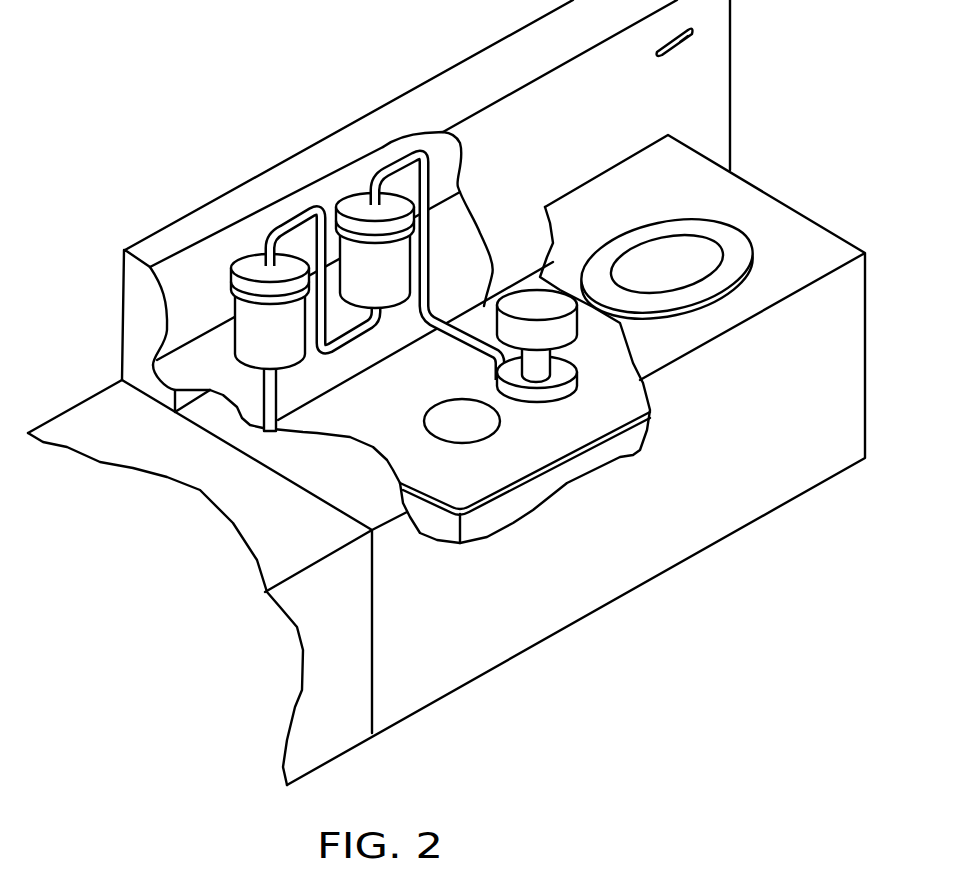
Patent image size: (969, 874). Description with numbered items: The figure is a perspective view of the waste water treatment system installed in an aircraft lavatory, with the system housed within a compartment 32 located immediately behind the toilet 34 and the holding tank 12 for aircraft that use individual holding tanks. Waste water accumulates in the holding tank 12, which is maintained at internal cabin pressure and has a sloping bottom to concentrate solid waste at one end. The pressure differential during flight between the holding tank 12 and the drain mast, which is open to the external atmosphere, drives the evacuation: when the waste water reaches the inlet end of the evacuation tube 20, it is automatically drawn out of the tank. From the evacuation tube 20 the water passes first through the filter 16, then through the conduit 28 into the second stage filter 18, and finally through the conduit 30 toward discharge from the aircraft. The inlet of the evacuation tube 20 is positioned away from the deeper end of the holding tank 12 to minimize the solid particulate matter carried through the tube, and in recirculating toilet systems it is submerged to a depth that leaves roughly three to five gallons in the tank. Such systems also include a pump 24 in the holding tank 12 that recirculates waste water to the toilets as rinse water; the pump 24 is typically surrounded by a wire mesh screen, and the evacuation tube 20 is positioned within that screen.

The holding tank 12 is at (517, 507).
The filter 16 is at (353, 200).
The second stage filter 18 is at (253, 263).
The evacuation tube 20 is at (472, 345).
The pump 24 is at (532, 310).
The conduit 28 is at (288, 222).
The conduit 30 is at (306, 415).
The compartment 32 is at (417, 108).
The toilet 34 is at (700, 267).